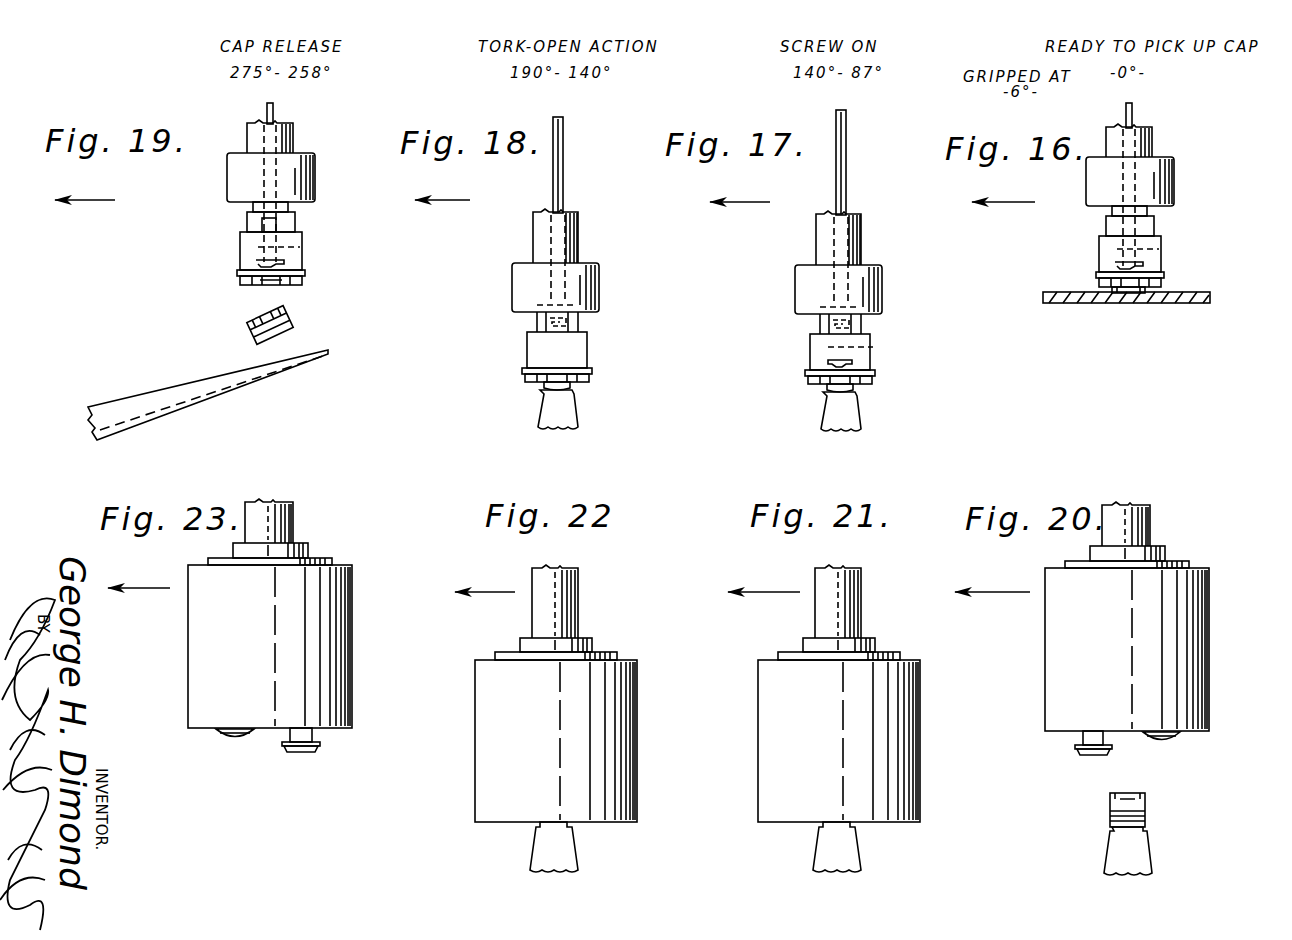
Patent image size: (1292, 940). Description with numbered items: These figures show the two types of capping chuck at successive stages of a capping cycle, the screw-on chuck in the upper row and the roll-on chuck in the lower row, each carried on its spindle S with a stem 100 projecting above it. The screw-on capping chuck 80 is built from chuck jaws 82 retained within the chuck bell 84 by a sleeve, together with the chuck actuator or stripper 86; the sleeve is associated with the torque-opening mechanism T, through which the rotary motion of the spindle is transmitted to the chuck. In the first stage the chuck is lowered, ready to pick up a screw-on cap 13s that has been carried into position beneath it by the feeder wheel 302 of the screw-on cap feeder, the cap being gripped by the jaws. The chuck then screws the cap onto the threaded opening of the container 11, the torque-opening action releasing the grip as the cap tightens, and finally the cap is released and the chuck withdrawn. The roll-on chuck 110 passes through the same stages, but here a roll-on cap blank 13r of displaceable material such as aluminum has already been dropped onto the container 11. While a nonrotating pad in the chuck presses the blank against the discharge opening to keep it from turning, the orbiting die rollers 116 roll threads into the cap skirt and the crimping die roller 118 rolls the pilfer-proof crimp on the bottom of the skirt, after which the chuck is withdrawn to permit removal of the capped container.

In FIG. 19, the stem 100 is at (274, 106).
In FIG. 18, the stem 100 is at (565, 136).
In FIG. 17, the stem 100 is at (871, 206).
In FIG. 16, the stem 100 is at (1177, 176).
In FIG. 19, the spindle S is at (245, 130).
In FIG. 18, the spindle S is at (581, 234).
In FIG. 17, the spindle S is at (861, 233).
In FIG. 16, the spindle S is at (1111, 125).
In FIG. 23, the spindle S is at (296, 520).
In FIG. 22, the spindle S is at (580, 587).
In FIG. 21, the spindle S is at (857, 593).
In FIG. 20, the spindle S is at (1148, 518).
In FIG. 19, the torque-opening mechanism T is at (320, 163).
In FIG. 18, the torque-opening mechanism T is at (510, 278).
In FIG. 17, the torque-opening mechanism T is at (817, 271).
In FIG. 16, the torque-opening mechanism T is at (1147, 170).
In FIG. 19, the screw-on capping chuck 80 is at (233, 206).
In FIG. 18, the screw-on capping chuck 80 is at (590, 318).
In FIG. 17, the screw-on capping chuck 80 is at (883, 321).
In FIG. 16, the screw-on capping chuck 80 is at (1168, 221).
In FIG. 18, the chuck bell 84 is at (538, 347).
In FIG. 17, the chuck bell 84 is at (816, 345).
In FIG. 16, the chuck bell 84 is at (1102, 250).
In FIG. 19, the chuck actuator or stripper 86 is at (298, 250).
In FIG. 17, the chuck actuator or stripper 86 is at (889, 350).
In FIG. 16, the chuck actuator or stripper 86 is at (1166, 249).
In FIG. 19, the chuck jaws 82 is at (285, 280).
In FIG. 18, the chuck jaws 82 is at (588, 383).
In FIG. 17, the chuck jaws 82 is at (875, 385).
In FIG. 16, the chuck jaws 82 is at (1101, 271).
In FIG. 19, the screw-on cap 13s is at (252, 315).
In FIG. 18, the screw-on cap 13s is at (545, 392).
In FIG. 17, the screw-on cap 13s is at (798, 397).
In FIG. 16, the screw-on cap 13s is at (1133, 314).
In FIG. 18, the container 11 is at (570, 418).
In FIG. 17, the container 11 is at (873, 411).
In FIG. 22, the container 11 is at (547, 845).
In FIG. 21, the container 11 is at (866, 847).
In FIG. 20, the container 11 is at (1106, 851).
In FIG. 16, the feeder wheel 302 is at (1107, 317).
In FIG. 23, the roll-on chuck 110 is at (358, 639).
In FIG. 22, the roll-on chuck 110 is at (641, 699).
In FIG. 21, the roll-on chuck 110 is at (874, 732).
In FIG. 20, the roll-on chuck 110 is at (1161, 649).
In FIG. 23, the die rollers 116 is at (227, 743).
In FIG. 20, the die rollers 116 is at (1199, 754).
In FIG. 23, the crimping die roller 118 is at (302, 758).
In FIG. 20, the crimping die roller 118 is at (1062, 751).
In FIG. 20, the roll-on cap blank 13r is at (1171, 806).